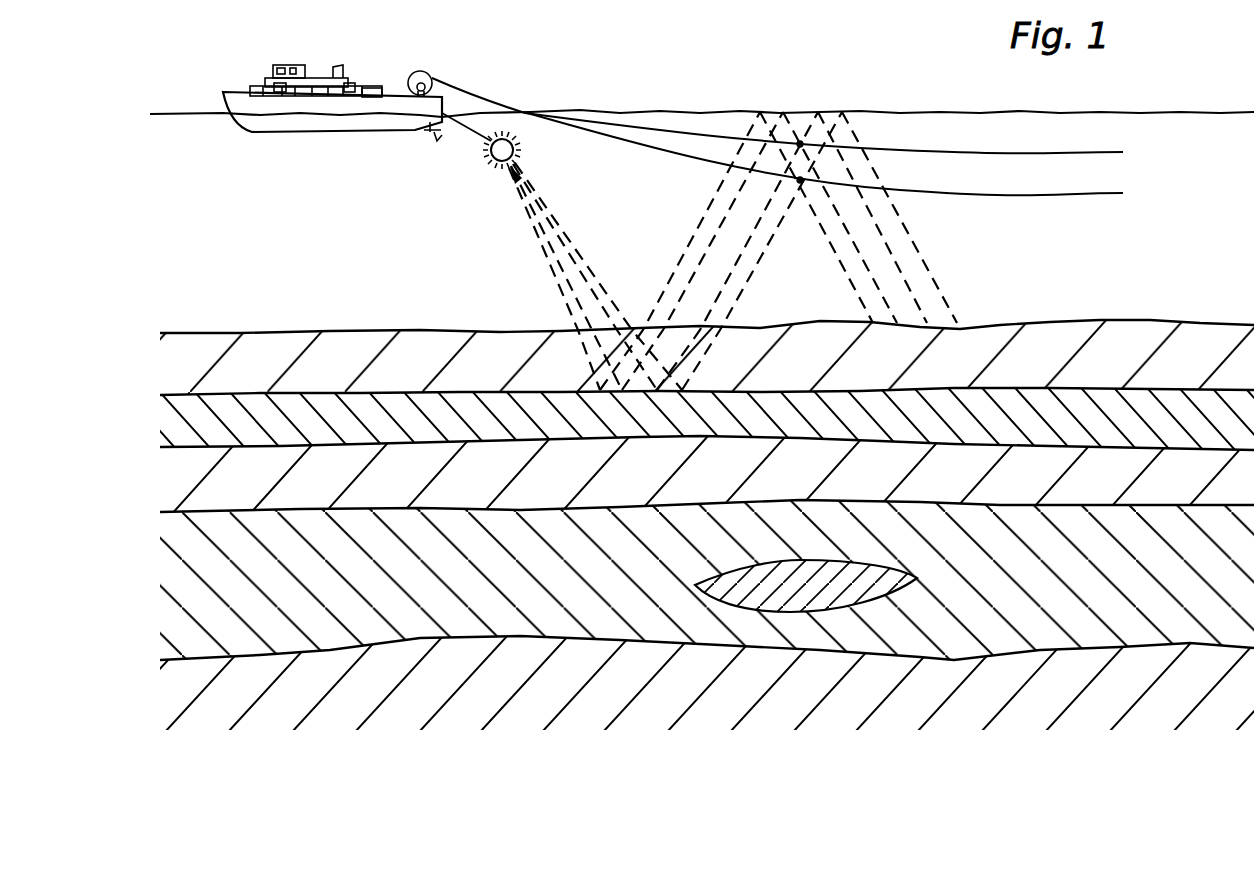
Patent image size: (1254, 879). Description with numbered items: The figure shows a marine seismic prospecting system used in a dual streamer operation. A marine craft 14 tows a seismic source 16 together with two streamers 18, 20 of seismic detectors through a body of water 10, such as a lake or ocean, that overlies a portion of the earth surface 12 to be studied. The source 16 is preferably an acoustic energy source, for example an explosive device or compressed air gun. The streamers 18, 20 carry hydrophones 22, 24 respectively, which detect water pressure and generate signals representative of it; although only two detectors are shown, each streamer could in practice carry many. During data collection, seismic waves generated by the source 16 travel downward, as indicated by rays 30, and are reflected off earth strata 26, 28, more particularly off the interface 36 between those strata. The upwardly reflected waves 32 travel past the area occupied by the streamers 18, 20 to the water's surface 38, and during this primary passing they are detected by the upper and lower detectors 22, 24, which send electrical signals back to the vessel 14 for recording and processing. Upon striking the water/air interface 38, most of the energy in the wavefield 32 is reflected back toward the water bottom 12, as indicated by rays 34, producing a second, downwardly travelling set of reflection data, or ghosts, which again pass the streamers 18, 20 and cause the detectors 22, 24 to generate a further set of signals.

The body of water 10 is at (1217, 244).
The earth surface 12 is at (1020, 324).
The marine craft 14 is at (317, 70).
The seismic source 16 is at (497, 160).
The streamer 18 is at (1113, 152).
The streamer 20 is at (1112, 193).
The hydrophone 22 is at (800, 140).
The hydrophone 24 is at (800, 184).
The earth strata 26 is at (955, 375).
The earth strata 28 is at (988, 436).
The rays 30 is at (558, 300).
The upwardly reflected waves 32 is at (718, 272).
The rays 34 is at (870, 262).
The interface 36 is at (718, 392).
The water's surface 38 is at (896, 110).